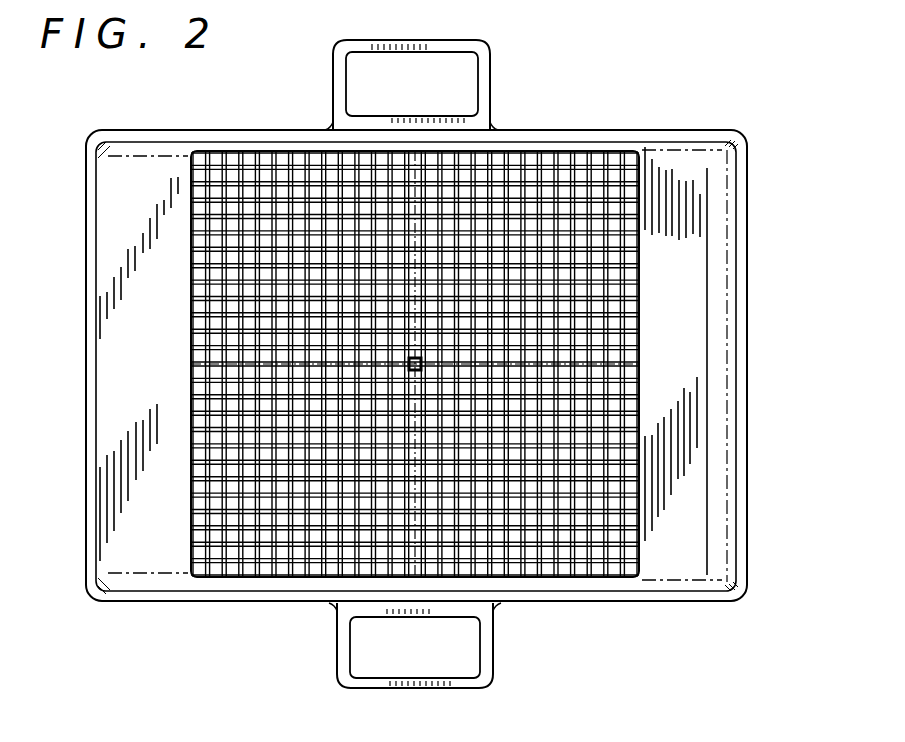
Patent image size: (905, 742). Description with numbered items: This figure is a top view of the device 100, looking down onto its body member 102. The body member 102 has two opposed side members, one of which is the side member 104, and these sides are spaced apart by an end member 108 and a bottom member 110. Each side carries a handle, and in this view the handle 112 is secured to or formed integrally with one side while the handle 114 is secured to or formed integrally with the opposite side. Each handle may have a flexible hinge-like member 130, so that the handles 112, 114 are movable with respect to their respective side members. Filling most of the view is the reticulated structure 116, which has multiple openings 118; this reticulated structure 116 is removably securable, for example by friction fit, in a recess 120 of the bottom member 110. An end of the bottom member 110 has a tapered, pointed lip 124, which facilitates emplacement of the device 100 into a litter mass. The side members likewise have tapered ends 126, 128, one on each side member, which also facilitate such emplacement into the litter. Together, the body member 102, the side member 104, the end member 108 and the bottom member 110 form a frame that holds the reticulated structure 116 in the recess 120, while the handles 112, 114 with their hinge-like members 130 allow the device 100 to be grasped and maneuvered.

The device 100 is at (694, 130).
The body member 102 is at (233, 130).
The side member 104 is at (695, 605).
The end member 108 is at (720, 468).
The bottom member 110 is at (100, 183).
The handle 112 is at (493, 648).
The handle 114 is at (490, 60).
The reticulated structure 116 is at (259, 578).
The openings 118 is at (495, 160).
The recess 120 is at (636, 258).
The tapered, pointed lip 124 is at (80, 503).
The tapered end 126 is at (137, 600).
The tapered end 128 is at (116, 133).
The flexible hinge-like member 130 is at (332, 128).